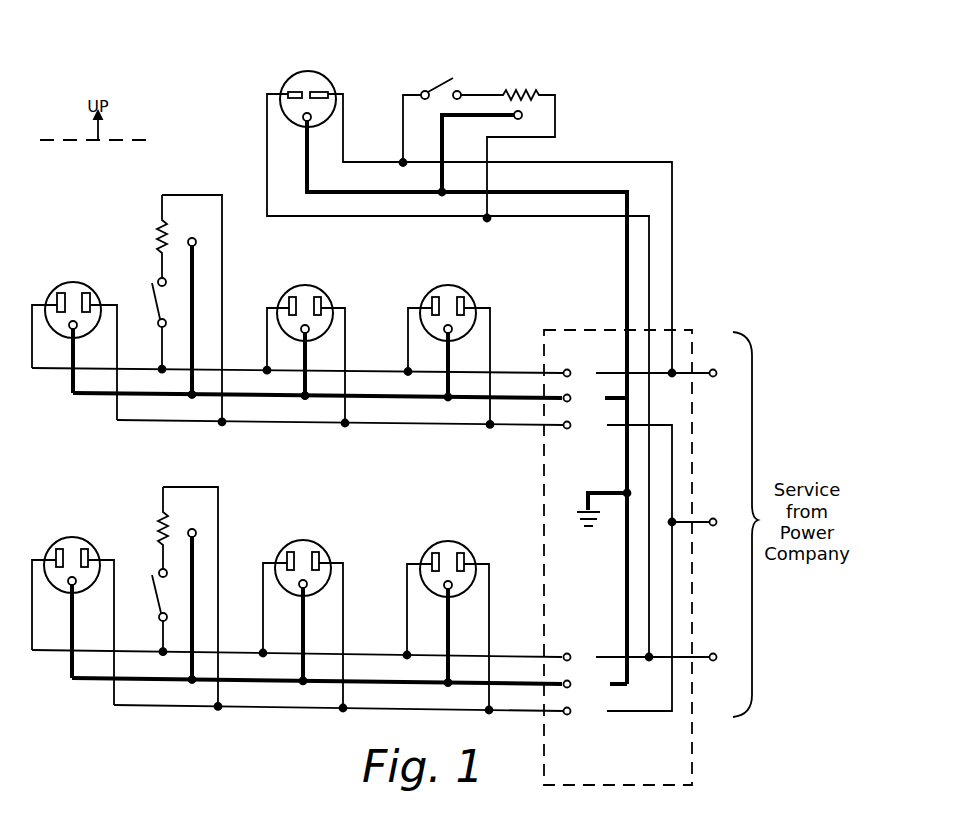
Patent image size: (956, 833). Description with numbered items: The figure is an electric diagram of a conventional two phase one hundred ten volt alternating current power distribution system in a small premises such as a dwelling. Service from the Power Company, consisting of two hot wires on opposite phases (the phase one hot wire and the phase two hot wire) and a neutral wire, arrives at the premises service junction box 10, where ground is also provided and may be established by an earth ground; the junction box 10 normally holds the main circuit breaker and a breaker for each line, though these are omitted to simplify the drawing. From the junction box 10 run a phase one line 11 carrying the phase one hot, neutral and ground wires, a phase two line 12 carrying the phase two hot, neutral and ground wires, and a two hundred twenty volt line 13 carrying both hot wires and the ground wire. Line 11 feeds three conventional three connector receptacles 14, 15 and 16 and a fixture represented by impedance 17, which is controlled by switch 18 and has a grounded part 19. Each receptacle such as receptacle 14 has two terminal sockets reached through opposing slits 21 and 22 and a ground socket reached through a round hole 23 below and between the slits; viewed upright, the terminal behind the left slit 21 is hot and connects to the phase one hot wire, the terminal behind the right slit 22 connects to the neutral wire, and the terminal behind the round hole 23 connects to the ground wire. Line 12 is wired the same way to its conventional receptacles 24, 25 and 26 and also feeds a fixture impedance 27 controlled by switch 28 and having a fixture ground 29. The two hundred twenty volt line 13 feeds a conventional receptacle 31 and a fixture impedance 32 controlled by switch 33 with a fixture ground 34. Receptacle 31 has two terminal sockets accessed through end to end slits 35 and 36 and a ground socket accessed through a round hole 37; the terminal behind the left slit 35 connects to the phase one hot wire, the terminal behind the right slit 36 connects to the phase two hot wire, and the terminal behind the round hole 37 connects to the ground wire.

The premises service junction box 10 is at (571, 330).
The 110 VAC phase one line 11 is at (121, 436).
The 110 VAC phase two line 12 is at (101, 704).
The 220 VAC line 13 is at (241, 115).
The three connector receptacle 14 is at (72, 283).
The three connector receptacle 15 is at (302, 285).
The three connector receptacle 16 is at (447, 285).
The fixture impedance 17 is at (157, 238).
The switch 18 is at (155, 301).
The grounded part 19 is at (192, 238).
The left slit 21 is at (57, 294).
The right slit 22 is at (88, 294).
The round hole 23 is at (70, 331).
The conventional receptacle 24 is at (73, 538).
The conventional receptacle 25 is at (303, 540).
The conventional receptacle 26 is at (448, 541).
The fixture impedance 27 is at (157, 528).
The switch 28 is at (155, 594).
The fixture ground 29 is at (192, 529).
The 220 VAC receptacle 31 is at (336, 82).
The 220 VAC fixture impedance 32 is at (523, 90).
The switch 33 is at (447, 85).
The fixture ground 34 is at (523, 121).
The left slit 35 is at (290, 88).
The right slit 36 is at (317, 100).
The round hole 37 is at (303, 121).